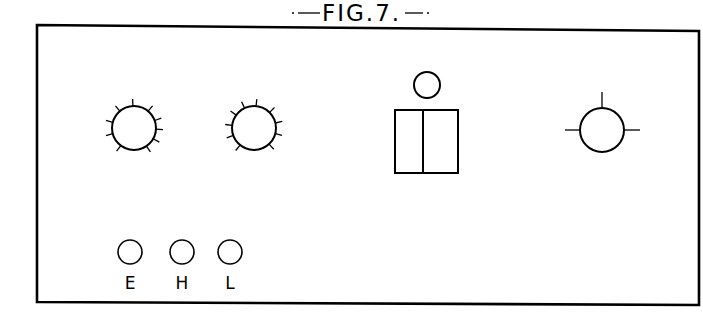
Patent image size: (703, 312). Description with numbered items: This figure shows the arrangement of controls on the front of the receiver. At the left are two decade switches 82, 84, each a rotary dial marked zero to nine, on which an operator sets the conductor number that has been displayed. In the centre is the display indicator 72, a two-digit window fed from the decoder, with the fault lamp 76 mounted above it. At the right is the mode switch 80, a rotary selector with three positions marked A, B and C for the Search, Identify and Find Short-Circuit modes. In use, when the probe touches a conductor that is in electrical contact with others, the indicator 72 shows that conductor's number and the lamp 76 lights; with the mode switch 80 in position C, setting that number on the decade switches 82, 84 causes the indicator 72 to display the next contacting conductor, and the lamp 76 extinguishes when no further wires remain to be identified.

The decade switch 82 is at (134, 125).
The decade switch 84 is at (253, 123).
The fault lamp 76 is at (430, 83).
The display indicator 72 is at (447, 158).
The mode switch 80 is at (602, 145).